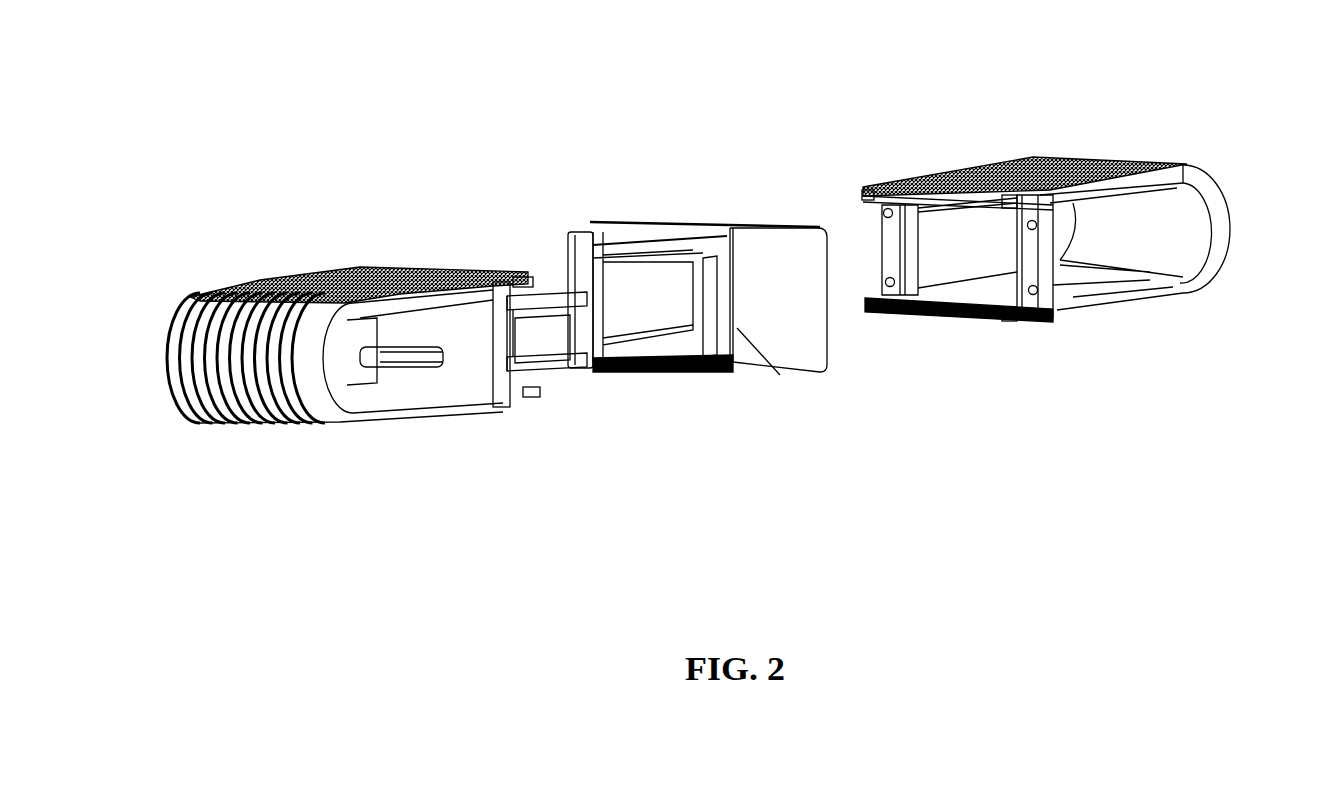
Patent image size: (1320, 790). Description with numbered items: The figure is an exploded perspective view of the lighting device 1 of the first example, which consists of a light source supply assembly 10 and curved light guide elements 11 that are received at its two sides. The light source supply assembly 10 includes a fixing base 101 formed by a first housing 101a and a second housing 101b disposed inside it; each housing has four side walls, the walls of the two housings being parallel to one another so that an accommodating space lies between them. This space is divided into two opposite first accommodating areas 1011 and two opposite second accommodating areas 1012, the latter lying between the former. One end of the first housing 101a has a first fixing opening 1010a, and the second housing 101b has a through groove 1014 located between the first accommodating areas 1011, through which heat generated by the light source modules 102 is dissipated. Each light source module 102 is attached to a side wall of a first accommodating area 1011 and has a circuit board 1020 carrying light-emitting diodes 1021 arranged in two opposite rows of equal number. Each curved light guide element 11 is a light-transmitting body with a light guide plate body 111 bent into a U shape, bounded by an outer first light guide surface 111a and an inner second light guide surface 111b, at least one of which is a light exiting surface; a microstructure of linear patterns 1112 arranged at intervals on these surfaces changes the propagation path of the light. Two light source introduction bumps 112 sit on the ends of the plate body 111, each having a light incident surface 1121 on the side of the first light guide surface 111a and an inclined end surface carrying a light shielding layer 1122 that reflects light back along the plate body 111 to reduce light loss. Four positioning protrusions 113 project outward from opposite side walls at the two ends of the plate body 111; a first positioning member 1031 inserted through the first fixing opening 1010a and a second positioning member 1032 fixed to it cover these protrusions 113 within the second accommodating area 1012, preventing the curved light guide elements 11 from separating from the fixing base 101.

The lighting device 1 is at (323, 128).
The light source supply assembly 10 is at (813, 397).
The fixing base 101 is at (835, 345).
The first housing 101a is at (845, 400).
The second housing 101b is at (650, 247).
The first accommodating area 1011 is at (673, 252).
The first fixing opening 1010a is at (727, 372).
The second accommodating area 1012 is at (522, 255).
The through groove 1014 is at (583, 232).
The light source module 102 is at (565, 242).
The circuit board 1020 is at (620, 373).
The light-emitting diode 1021 is at (618, 252).
The curved light guide element 11 is at (437, 443).
The light guide plate body 111 is at (357, 413).
The first light guide surface 111a is at (258, 288).
The second light guide surface 111b is at (388, 400).
The linear pattern 1112 is at (208, 428).
The light source introduction bump 112 is at (860, 183).
The light incident surface 1121 is at (860, 187).
The light shielding layer 1122 is at (860, 197).
The positioning protrusion 113 is at (527, 282).
The first positioning member 1031 is at (505, 407).
The second positioning member 1032 is at (1183, 293).